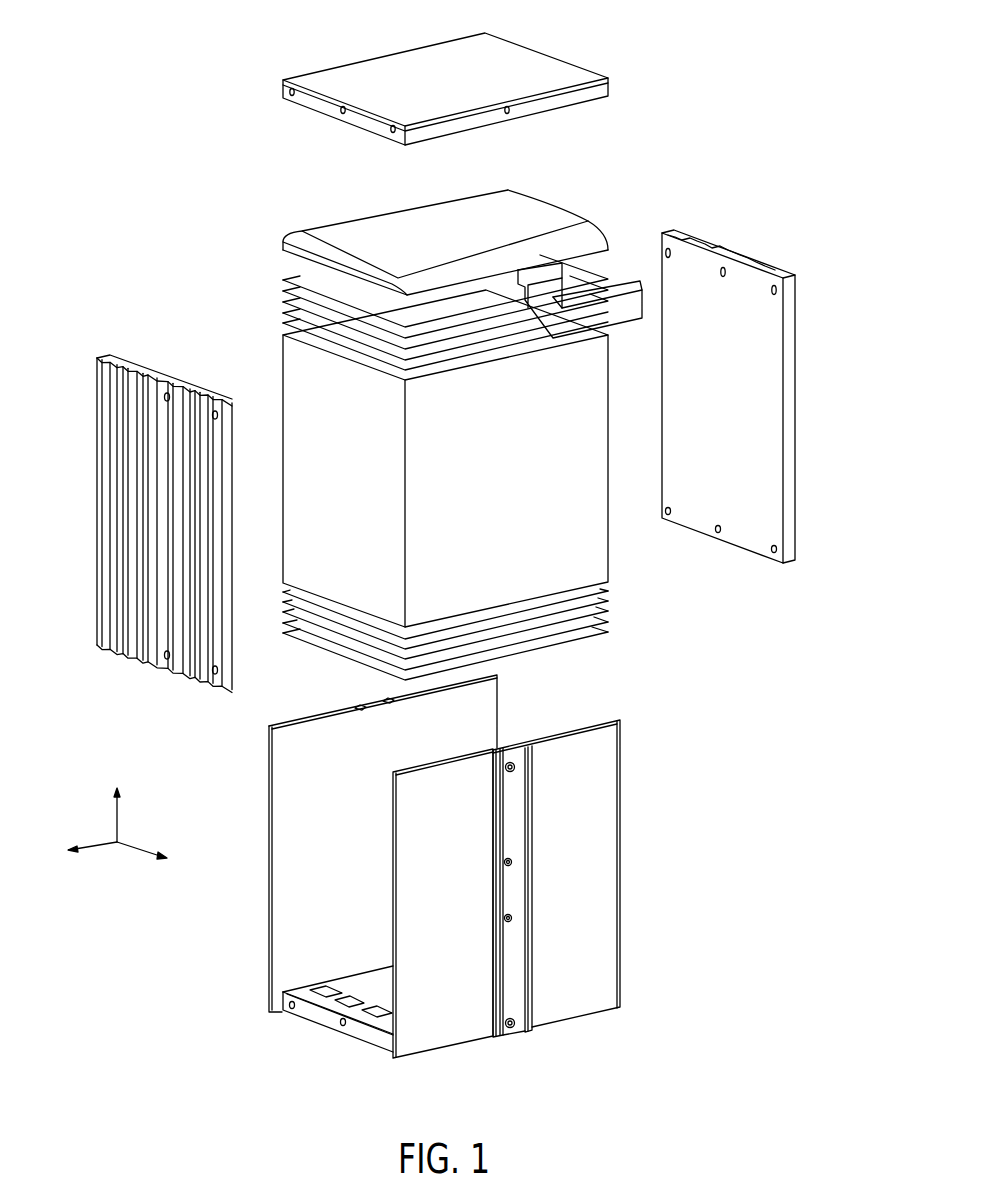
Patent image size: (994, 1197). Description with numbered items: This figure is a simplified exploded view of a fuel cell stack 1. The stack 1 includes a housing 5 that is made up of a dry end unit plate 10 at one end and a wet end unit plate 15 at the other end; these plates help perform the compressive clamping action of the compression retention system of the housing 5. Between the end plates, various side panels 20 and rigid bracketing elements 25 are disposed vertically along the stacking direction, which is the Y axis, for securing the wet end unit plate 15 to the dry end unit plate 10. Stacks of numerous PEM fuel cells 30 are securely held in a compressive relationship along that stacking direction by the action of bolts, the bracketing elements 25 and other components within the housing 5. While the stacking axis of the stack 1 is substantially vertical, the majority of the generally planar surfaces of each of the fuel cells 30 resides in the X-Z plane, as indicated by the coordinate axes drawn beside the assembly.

The fuel cell stack 1 is at (167, 137).
The housing 5 is at (777, 682).
The dry end unit plate 10 is at (412, 62).
The wet end unit plate 15 is at (315, 1015).
The side panels 20 is at (97, 495).
The rigid bracketing elements 25 is at (532, 932).
The fuel cells 30 is at (607, 610).